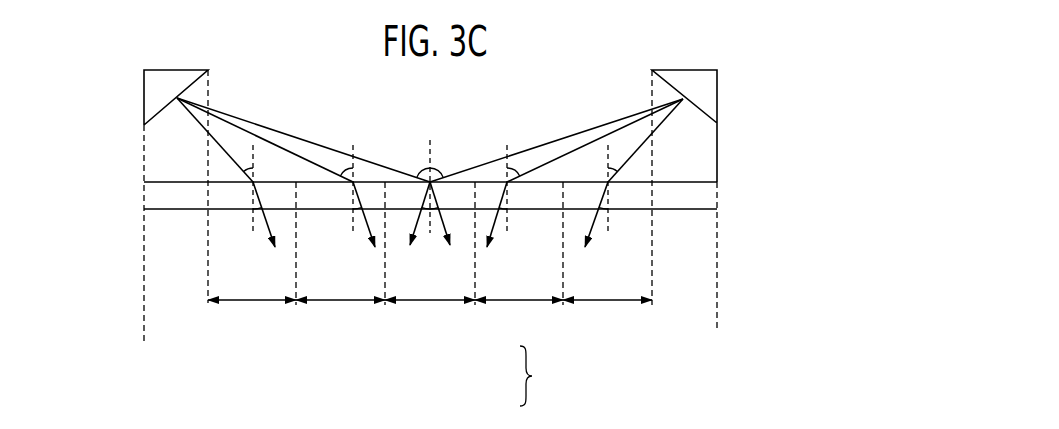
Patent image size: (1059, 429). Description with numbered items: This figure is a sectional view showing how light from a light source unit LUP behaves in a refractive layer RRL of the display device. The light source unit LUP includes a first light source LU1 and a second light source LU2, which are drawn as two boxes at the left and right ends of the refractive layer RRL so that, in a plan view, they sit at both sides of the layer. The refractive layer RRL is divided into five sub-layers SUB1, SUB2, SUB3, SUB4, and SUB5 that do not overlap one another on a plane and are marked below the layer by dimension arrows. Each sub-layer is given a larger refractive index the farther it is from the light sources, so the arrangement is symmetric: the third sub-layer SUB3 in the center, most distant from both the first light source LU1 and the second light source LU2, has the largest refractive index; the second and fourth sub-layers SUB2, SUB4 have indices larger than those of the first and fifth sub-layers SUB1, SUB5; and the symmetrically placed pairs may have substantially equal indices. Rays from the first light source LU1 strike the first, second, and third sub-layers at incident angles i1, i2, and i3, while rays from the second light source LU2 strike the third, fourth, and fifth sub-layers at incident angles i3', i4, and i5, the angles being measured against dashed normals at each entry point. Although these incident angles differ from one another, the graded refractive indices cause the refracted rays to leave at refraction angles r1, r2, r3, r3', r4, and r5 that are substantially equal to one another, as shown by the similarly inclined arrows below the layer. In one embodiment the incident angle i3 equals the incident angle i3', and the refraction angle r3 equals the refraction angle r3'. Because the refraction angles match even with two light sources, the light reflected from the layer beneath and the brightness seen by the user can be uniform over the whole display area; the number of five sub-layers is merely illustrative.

The first light source LU1 is at (150, 84).
The second light source LU2 is at (710, 90).
The light source unit LUP is at (528, 376).
The refractive layer RRL is at (710, 196).
The incident angle i1 is at (250, 167).
The incident angle i2 is at (346, 168).
The incident angle i3 is at (303, 165).
The incident angle i3' is at (556, 140).
The incident angle i4 is at (515, 168).
The incident angle i5 is at (614, 169).
The refraction angle r1 is at (256, 211).
The refraction angle r2 is at (356, 211).
The refraction angle r3 is at (444, 232).
The refraction angle r3' is at (418, 232).
The refraction angle r4 is at (503, 209).
The refraction angle r5 is at (604, 209).
The first sub-layer SUB1 is at (252, 315).
The second sub-layer SUB2 is at (340, 315).
The third sub-layer SUB3 is at (430, 315).
The fourth sub-layer SUB4 is at (519, 315).
The fifth sub-layer SUB5 is at (607, 315).